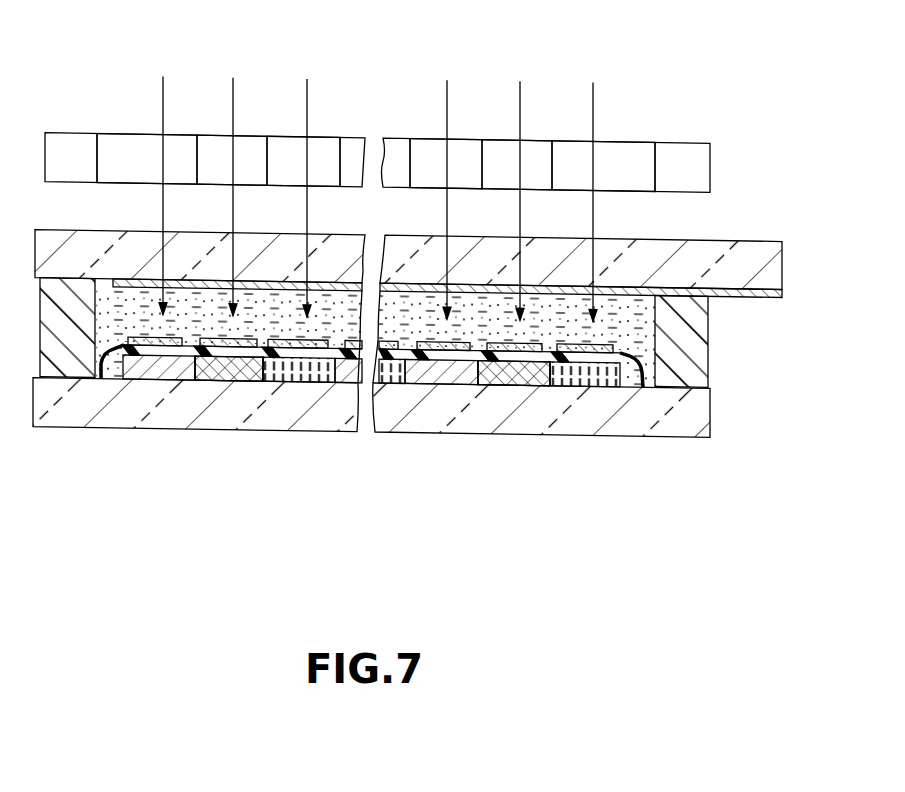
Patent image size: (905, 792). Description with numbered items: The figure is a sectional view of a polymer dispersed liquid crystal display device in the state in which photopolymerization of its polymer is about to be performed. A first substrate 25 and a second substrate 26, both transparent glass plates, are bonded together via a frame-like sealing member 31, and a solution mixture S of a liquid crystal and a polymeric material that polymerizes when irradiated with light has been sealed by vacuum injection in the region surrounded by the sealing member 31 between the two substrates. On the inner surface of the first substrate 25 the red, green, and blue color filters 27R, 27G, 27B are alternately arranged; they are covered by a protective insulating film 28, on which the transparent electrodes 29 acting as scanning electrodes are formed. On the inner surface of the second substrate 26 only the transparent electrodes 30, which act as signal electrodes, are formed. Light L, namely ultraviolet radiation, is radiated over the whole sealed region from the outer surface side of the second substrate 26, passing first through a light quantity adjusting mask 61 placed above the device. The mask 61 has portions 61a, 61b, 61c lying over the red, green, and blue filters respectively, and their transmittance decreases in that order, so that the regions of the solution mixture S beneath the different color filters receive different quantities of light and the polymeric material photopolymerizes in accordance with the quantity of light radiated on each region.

The first substrate 25 is at (645, 418).
The second substrate 26 is at (672, 262).
The red color filter 27R is at (147, 383).
The green color filter 27G is at (233, 383).
The blue color filter 27B is at (312, 383).
The protective insulating film 28 is at (395, 385).
The transparent electrodes (scanning electrodes) 29 is at (180, 365).
The transparent electrodes (signal electrodes) 30 is at (134, 290).
The sealing member 31 is at (697, 345).
The light quantity adjusting mask 61 is at (355, 137).
The mask portion corresponding to the red filter 61a is at (117, 150).
The mask portion corresponding to the green filter 61b is at (204, 150).
The mask portion corresponding to the blue filter 61c is at (279, 152).
The light L is at (163, 107).
The solution mixture S is at (604, 317).